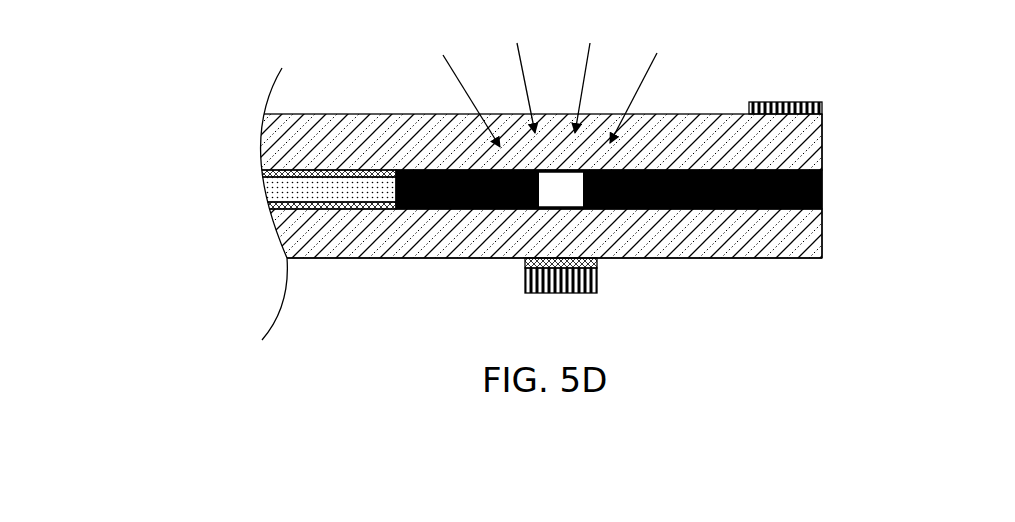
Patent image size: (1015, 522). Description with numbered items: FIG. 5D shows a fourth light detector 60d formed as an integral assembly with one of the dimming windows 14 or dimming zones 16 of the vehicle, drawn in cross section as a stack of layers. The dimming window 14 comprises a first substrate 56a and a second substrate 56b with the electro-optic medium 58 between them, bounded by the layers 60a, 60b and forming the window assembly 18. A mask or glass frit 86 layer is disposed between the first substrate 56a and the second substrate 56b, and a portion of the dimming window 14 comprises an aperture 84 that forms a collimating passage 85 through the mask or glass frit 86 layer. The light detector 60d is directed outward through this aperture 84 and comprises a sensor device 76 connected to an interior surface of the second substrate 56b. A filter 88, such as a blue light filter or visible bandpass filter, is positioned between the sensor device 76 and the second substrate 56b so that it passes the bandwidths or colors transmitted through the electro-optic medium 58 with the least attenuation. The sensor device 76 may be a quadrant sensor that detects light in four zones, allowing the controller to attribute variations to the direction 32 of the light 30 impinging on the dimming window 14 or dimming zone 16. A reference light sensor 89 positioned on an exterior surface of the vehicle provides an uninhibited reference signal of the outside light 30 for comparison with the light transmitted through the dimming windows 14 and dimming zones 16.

The dimming window 14 is at (582, 203).
The dimming zone 16 is at (582, 203).
The photovoltaic device 18 is at (582, 203).
The light 30 is at (506, 95).
The direction 32 is at (582, 82).
The first substrate 56a is at (265, 137).
The second substrate 56b is at (808, 242).
The electro-optic medium 58 is at (277, 190).
The upper electrode layer 60a is at (265, 173).
The lower electrode layer 60b is at (290, 210).
The fourth light detector 60d is at (425, 328).
The sensor device 76 is at (585, 283).
The aperture 84 is at (499, 232).
The collimating passage 85 is at (555, 197).
The mask or glass frit layer 86 is at (672, 170).
The filter 88 is at (597, 262).
The reference light sensor 89 is at (783, 100).